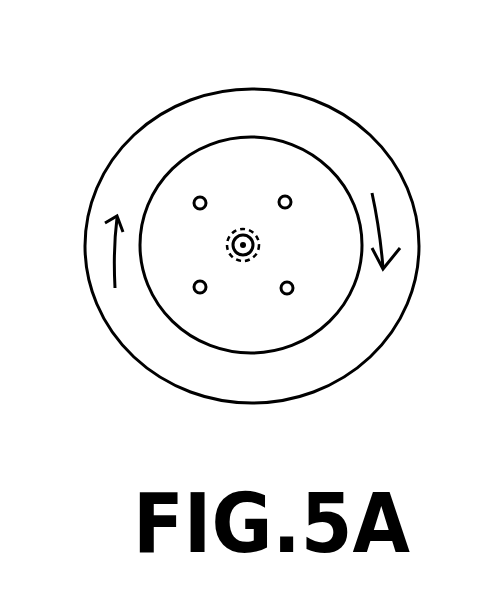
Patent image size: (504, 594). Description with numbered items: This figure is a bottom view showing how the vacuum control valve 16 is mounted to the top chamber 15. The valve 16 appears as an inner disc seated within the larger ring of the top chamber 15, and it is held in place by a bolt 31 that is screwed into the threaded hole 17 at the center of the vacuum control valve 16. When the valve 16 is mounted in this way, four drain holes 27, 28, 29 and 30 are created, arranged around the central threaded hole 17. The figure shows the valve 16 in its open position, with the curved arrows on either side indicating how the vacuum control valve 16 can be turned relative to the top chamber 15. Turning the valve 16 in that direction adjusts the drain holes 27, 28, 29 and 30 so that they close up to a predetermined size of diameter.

The top chamber 15 is at (122, 147).
The vacuum control valve 16 is at (330, 168).
The threaded hole 17 is at (233, 250).
The drain hole 27 is at (200, 197).
The drain hole 28 is at (287, 196).
The drain hole 29 is at (199, 294).
The drain hole 30 is at (289, 294).
The bolt 31 is at (241, 243).